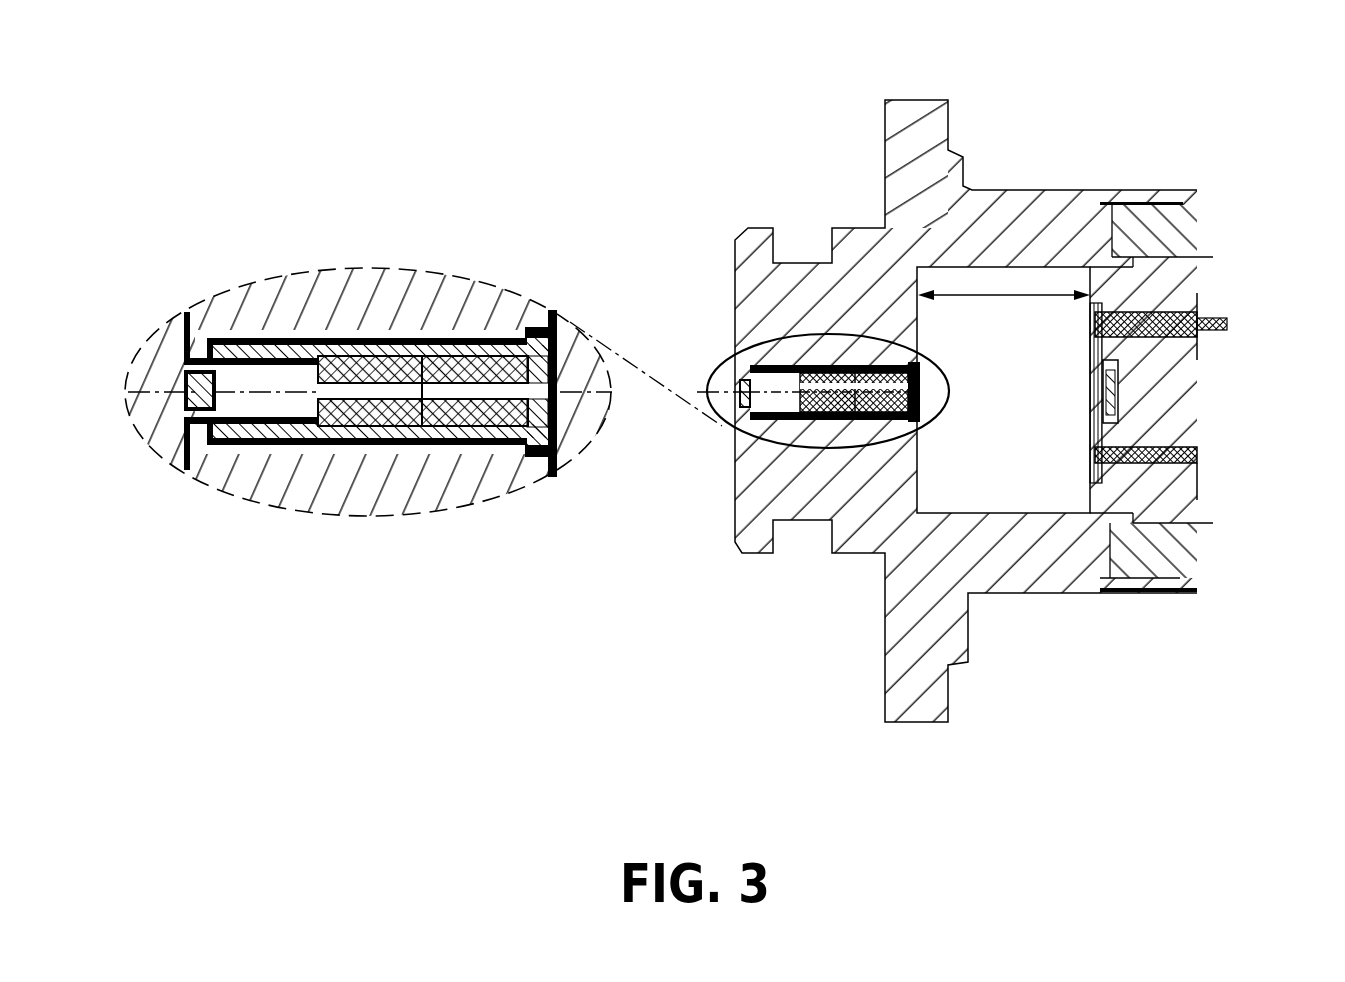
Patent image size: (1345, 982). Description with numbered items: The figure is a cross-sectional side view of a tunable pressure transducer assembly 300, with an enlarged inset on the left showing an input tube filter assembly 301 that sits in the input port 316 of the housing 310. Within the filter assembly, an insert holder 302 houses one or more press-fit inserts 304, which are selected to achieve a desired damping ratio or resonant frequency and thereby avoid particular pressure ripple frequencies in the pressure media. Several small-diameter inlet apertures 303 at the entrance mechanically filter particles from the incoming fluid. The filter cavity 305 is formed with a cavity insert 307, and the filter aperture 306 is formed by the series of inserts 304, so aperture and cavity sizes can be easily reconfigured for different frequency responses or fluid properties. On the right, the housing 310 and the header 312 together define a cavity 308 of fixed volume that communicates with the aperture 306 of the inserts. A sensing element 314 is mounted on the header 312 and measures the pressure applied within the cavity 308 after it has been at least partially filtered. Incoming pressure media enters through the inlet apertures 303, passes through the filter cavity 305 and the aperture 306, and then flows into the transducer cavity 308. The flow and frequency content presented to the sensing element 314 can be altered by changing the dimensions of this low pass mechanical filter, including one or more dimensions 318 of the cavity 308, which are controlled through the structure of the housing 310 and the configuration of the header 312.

The tunable pressure transducer assembly 300 is at (971, 369).
The input tube filter assembly 301 is at (380, 429).
The insert holder 302 is at (538, 342).
The inlet apertures 303 is at (183, 373).
The inserts 304 is at (442, 420).
The filter cavity 305 is at (253, 392).
The filter aperture 306 is at (549, 393).
The cavity insert 307 is at (232, 421).
The cavity 308 is at (1015, 483).
The housing 310 is at (957, 222).
The header 312 is at (1162, 500).
The sensing element 314 is at (1115, 396).
The input port 316 is at (688, 416).
The dimensions 318 is at (1007, 297).